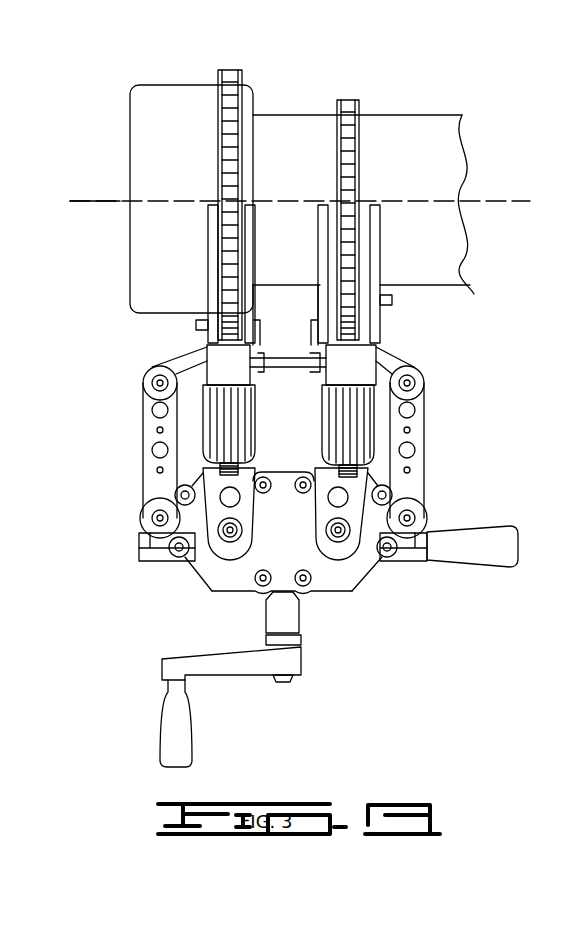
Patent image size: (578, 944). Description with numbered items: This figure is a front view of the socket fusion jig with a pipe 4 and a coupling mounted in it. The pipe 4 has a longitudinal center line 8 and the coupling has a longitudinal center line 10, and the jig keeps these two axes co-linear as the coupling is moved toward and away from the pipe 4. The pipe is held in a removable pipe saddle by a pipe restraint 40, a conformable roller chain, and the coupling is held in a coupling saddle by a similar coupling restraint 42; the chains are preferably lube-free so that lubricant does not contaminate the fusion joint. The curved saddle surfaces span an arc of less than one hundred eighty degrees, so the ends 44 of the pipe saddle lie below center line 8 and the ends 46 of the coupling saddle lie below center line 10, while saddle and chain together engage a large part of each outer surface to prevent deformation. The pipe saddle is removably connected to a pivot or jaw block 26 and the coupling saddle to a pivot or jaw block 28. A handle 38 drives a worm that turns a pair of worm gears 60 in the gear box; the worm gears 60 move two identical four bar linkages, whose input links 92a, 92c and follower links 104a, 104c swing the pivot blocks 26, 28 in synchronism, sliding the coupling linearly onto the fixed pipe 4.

The pipe 4 is at (460, 115).
The longitudinal center line 8 is at (510, 200).
The longitudinal center line 10 is at (92, 200).
The pivot or jaw block 26 is at (398, 356).
The pivot or jaw block 28 is at (175, 356).
The handle 38 is at (160, 740).
The pipe restraint 40 is at (357, 100).
The coupling restraint 42 is at (236, 70).
The ends of pipe saddle 44 is at (383, 265).
The ends of coupling saddle 46 is at (208, 265).
The worm gears 60 is at (167, 85).
The input link 92a is at (347, 557).
The input link 92c is at (220, 556).
The follower link 104a is at (425, 450).
The follower link 104c is at (143, 445).